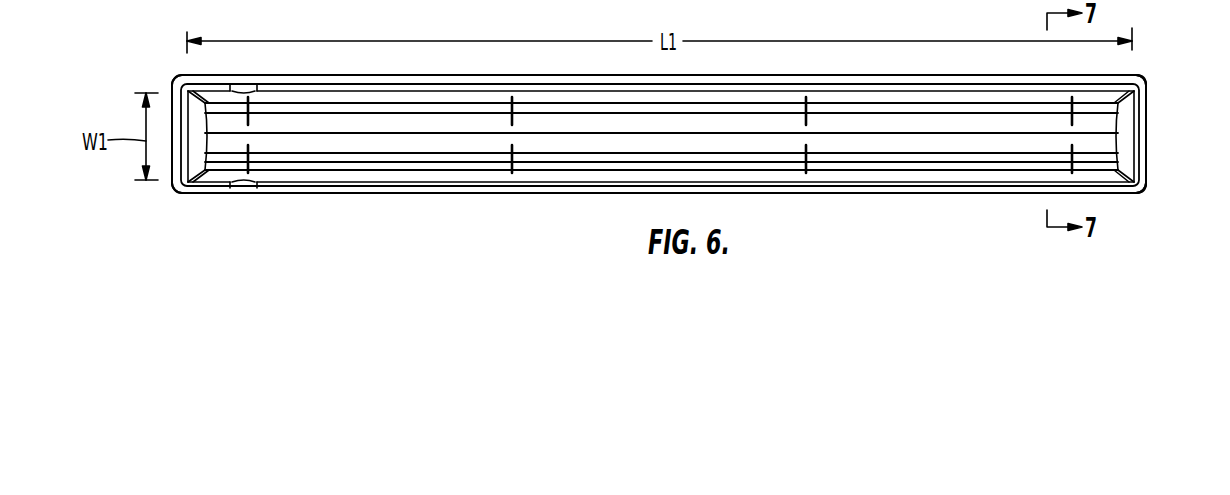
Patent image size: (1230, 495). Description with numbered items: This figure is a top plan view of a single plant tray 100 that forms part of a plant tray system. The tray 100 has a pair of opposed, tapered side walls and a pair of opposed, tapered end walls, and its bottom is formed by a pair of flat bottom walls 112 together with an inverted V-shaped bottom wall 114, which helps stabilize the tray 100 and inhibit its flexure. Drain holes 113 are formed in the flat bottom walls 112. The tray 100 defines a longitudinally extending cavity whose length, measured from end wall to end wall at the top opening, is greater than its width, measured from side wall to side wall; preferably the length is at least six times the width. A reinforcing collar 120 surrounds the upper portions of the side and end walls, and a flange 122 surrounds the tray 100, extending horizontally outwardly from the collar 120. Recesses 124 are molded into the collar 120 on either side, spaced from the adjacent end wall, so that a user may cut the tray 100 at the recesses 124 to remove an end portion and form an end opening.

The tray 100 is at (1160, 129).
The flat bottom walls 112 is at (947, 158).
The drain holes 113 is at (515, 163).
The inverted V-shaped bottom wall 114 is at (883, 138).
The reinforcing collar 120 is at (1005, 203).
The flange 122 is at (1120, 190).
The recesses 124 is at (247, 88).